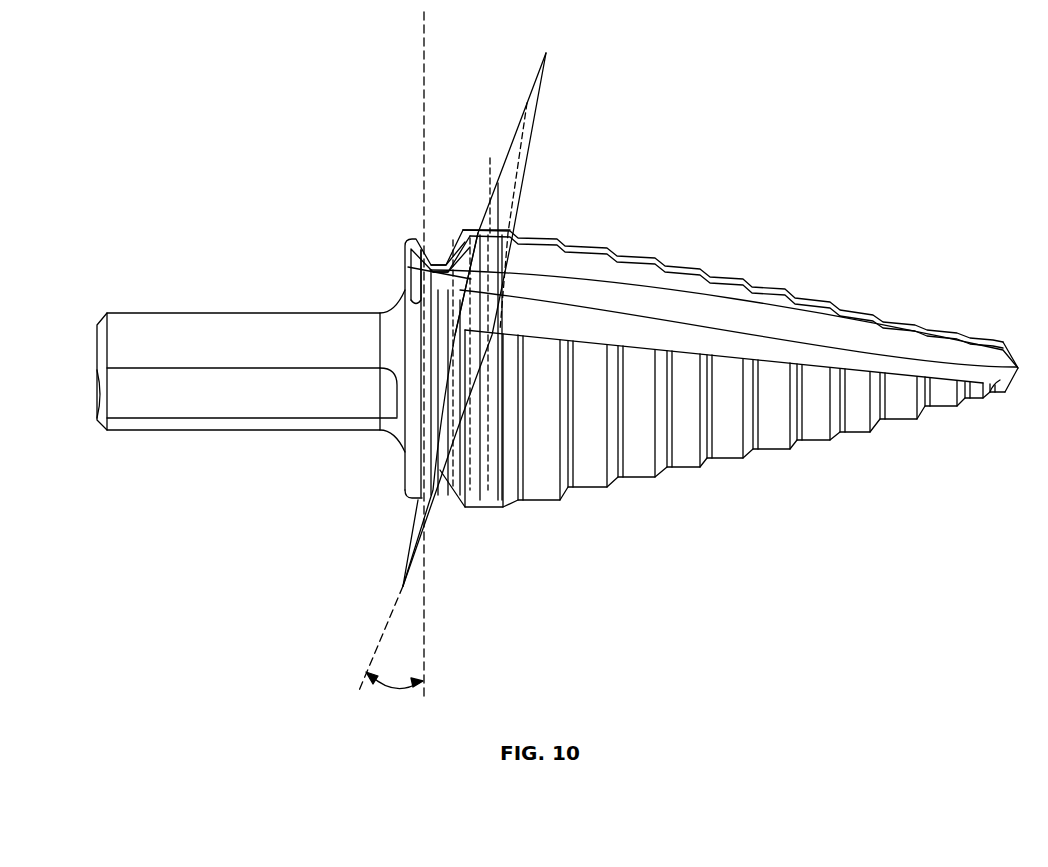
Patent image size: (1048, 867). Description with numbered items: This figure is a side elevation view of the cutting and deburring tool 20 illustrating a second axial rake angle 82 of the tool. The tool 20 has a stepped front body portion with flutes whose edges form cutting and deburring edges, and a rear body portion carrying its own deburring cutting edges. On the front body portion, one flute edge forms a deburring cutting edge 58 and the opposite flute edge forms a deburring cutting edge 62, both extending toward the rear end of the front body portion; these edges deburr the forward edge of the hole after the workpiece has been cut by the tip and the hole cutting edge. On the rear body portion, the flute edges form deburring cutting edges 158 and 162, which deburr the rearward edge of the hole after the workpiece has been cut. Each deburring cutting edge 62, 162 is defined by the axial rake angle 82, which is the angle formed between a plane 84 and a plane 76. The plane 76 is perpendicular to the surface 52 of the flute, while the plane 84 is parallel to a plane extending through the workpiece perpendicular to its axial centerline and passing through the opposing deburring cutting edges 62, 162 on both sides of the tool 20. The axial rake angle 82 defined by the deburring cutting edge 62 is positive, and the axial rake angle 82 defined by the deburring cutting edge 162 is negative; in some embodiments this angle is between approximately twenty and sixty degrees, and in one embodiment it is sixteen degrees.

The cutting and deburring tool 20 is at (817, 188).
The surface of the flute 52 is at (770, 350).
The deburring cutting edge 58 is at (452, 236).
The deburring cutting edge 62 is at (450, 302).
The plane 76 is at (510, 203).
The axial rake angle 82 is at (393, 690).
The plane 84 is at (425, 562).
The deburring cutting edge 158 is at (428, 255).
The deburring cutting edge 162 is at (437, 276).